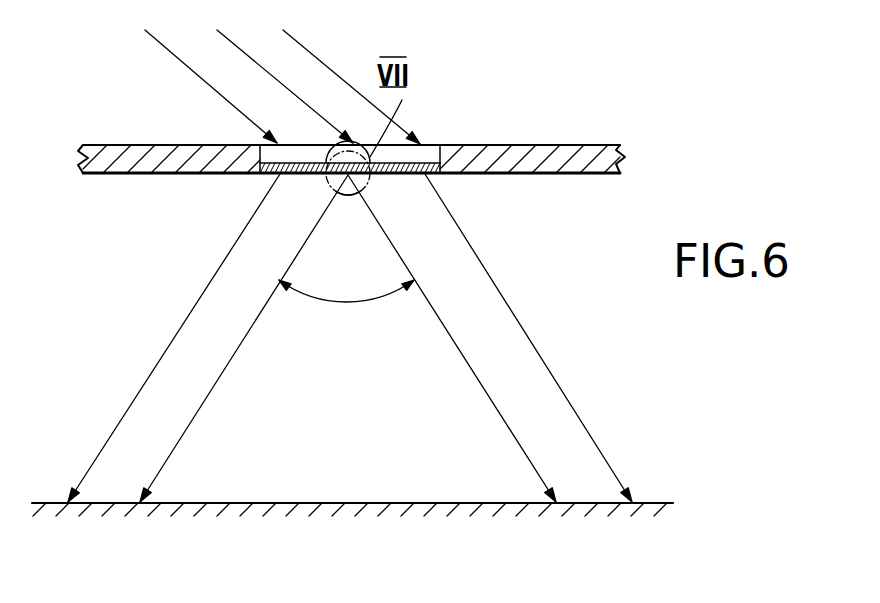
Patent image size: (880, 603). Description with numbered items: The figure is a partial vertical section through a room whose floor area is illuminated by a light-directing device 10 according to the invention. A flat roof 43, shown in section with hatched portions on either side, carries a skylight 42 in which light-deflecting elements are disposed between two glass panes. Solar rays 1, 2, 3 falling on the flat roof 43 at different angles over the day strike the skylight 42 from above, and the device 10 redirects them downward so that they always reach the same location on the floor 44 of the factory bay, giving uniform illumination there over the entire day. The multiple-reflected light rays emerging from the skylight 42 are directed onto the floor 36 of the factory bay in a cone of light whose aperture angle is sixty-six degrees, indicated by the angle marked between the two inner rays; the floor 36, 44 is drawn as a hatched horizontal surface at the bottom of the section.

The solar ray 1 is at (197, 74).
The solar ray 2 is at (271, 74).
The solar ray 3 is at (338, 74).
The optical measuring arrangement 10 is at (575, 358).
The floor of the factory bay 36 is at (382, 503).
The skylight 42 is at (425, 175).
The flat roof 43 is at (503, 158).
The floor 44 is at (593, 512).